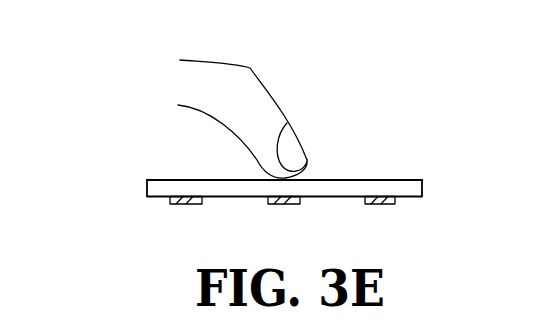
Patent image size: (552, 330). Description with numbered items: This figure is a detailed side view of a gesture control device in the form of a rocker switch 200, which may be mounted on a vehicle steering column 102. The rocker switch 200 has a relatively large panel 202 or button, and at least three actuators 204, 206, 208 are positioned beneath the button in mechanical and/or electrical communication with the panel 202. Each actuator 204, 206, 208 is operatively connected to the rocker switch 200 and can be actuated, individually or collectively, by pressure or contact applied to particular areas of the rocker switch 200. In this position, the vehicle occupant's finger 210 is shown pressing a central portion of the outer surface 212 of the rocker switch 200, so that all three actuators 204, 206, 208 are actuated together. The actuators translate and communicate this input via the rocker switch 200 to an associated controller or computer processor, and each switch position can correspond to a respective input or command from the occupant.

The steering column 102 is at (153, 180).
The rocker switch 200 is at (358, 143).
The panel 202 is at (388, 180).
The lower actuator 204 is at (172, 203).
The actuator 206 is at (268, 203).
The upper actuator 208 is at (397, 203).
The finger 210 is at (250, 68).
The surface 212 is at (408, 180).